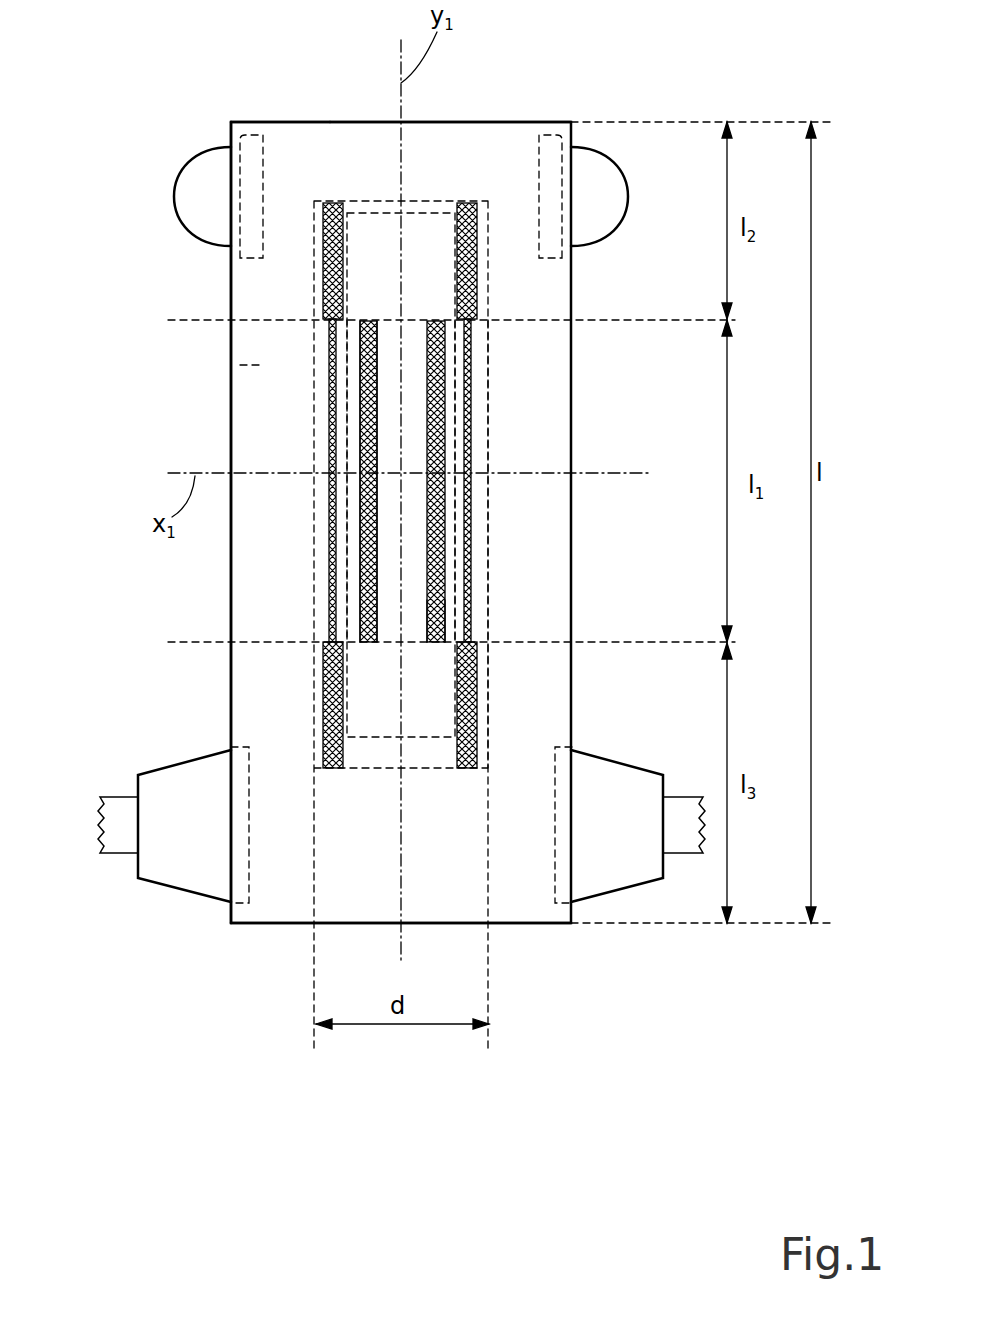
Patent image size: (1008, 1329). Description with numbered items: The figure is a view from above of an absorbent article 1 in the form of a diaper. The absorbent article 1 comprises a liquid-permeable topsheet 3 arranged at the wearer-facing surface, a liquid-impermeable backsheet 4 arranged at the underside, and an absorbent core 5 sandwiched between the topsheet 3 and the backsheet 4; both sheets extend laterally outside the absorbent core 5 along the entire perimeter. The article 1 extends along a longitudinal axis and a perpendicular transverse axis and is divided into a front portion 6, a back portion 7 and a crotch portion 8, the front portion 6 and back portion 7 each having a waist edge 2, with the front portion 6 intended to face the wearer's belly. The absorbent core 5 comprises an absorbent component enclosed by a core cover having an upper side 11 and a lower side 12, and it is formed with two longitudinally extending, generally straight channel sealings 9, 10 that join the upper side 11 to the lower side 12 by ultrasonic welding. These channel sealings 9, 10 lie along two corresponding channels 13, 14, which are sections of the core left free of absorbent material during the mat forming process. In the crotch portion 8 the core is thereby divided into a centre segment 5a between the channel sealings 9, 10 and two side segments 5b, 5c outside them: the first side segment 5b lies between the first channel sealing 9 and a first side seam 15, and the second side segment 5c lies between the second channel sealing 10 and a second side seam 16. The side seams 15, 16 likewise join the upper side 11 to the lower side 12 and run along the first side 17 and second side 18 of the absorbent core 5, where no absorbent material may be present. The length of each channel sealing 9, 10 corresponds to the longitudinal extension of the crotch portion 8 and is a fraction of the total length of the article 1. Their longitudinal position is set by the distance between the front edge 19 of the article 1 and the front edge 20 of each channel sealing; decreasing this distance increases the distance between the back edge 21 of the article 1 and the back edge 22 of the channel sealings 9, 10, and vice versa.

The absorbent article 1 is at (627, 107).
The waist edge 2 is at (520, 122).
The topsheet 3 is at (250, 333).
The backsheet 4 is at (255, 367).
The absorbent core 5 is at (370, 200).
The centre segment 5a is at (410, 525).
The first side segment 5b is at (352, 525).
The second side segment 5c is at (455, 568).
The front portion 6 is at (160, 165).
The back portion 7 is at (136, 733).
The crotch portion 8 is at (122, 467).
The first channel sealing 9 is at (363, 596).
The second channel sealing 10 is at (440, 608).
The upper side of core cover 11 is at (480, 330).
The lower side of core cover 12 is at (490, 342).
The first channel 13 is at (365, 573).
The second channel 14 is at (440, 442).
The first side seam 15 is at (335, 412).
The second side seam 16 is at (470, 378).
The first side of absorbent core 17 is at (316, 692).
The second side of absorbent core 18 is at (490, 692).
The front edge of article 19 is at (278, 122).
The front edge of channel sealing 20 is at (370, 320).
The back edge of article 21 is at (265, 925).
The back edge of channel sealing 22 is at (435, 642).